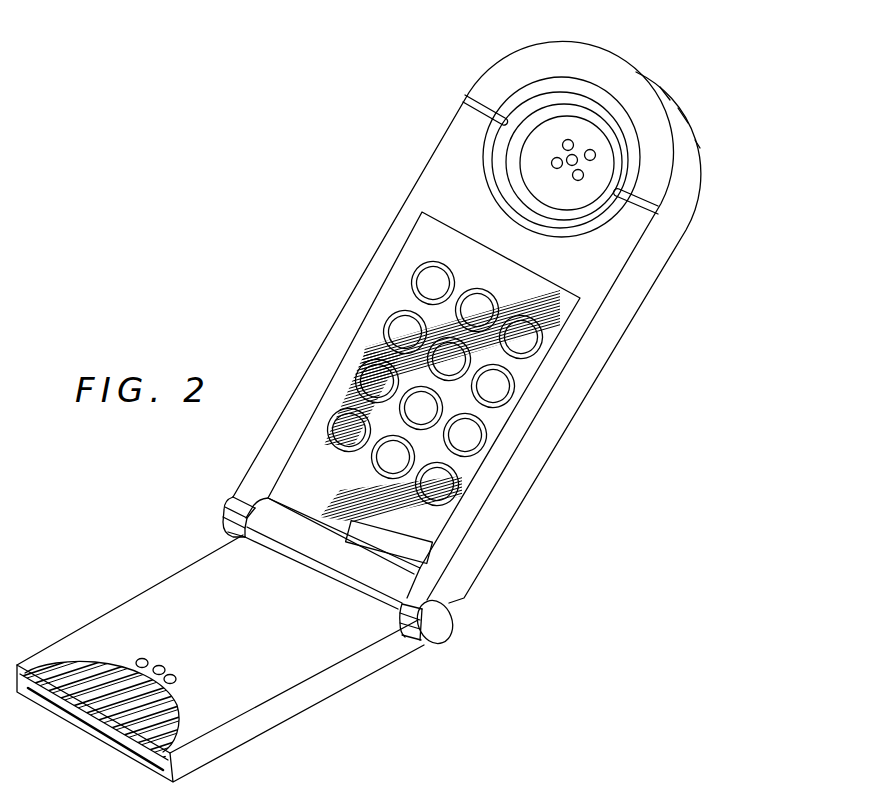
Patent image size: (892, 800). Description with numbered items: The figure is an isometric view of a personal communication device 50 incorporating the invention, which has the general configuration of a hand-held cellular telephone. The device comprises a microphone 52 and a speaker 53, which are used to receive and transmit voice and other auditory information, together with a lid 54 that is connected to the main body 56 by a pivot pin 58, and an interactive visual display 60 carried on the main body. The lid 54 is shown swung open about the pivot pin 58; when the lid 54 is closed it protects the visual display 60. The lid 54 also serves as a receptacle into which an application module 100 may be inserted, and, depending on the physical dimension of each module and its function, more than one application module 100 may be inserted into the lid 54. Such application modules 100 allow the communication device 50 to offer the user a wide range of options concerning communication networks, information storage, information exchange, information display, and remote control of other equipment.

The communication device 50 is at (400, 407).
The microphone 52 is at (174, 655).
The speaker 53 is at (595, 98).
The lid 54 is at (212, 667).
The main body 56 is at (524, 479).
The pivot pin 58 is at (440, 625).
The interactive visual display 60 is at (560, 300).
The application module 100 is at (66, 740).